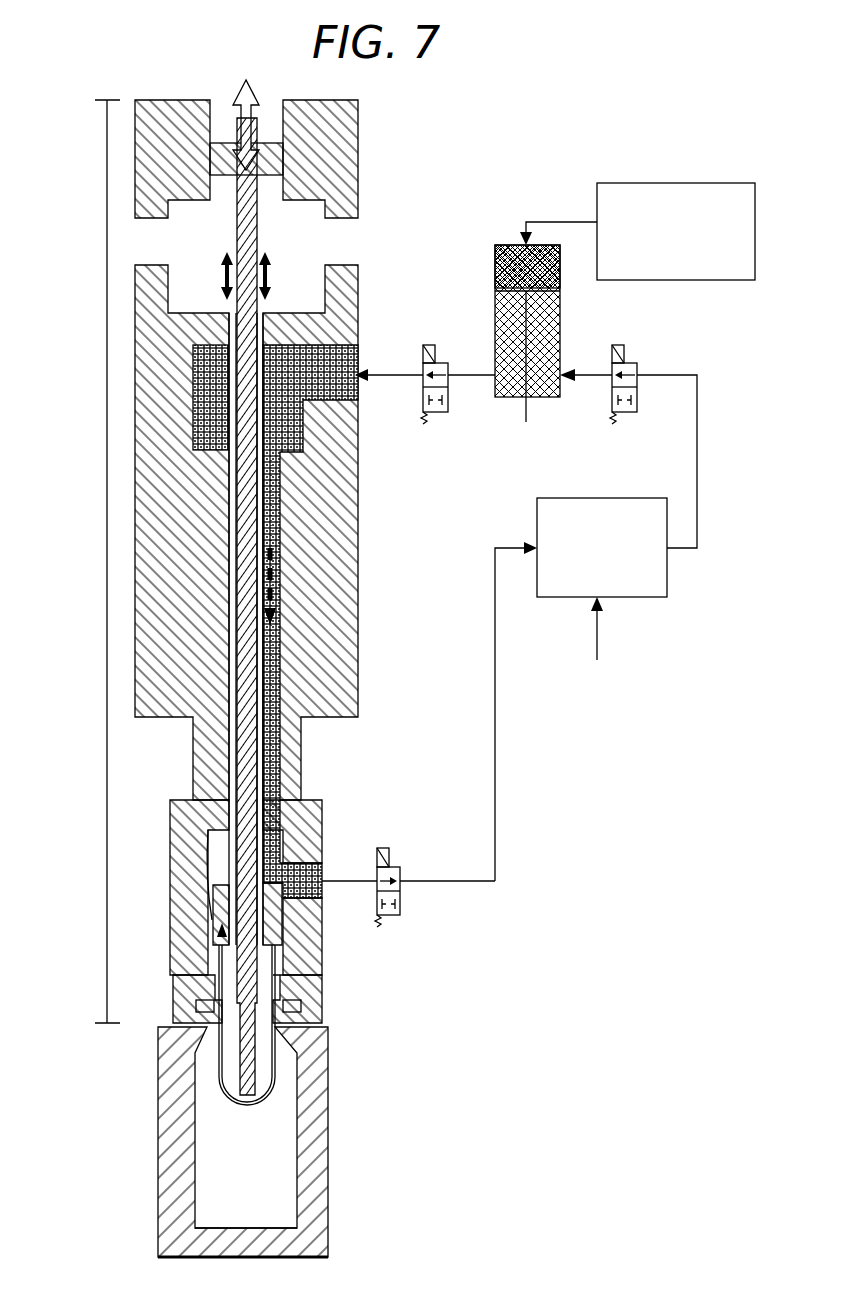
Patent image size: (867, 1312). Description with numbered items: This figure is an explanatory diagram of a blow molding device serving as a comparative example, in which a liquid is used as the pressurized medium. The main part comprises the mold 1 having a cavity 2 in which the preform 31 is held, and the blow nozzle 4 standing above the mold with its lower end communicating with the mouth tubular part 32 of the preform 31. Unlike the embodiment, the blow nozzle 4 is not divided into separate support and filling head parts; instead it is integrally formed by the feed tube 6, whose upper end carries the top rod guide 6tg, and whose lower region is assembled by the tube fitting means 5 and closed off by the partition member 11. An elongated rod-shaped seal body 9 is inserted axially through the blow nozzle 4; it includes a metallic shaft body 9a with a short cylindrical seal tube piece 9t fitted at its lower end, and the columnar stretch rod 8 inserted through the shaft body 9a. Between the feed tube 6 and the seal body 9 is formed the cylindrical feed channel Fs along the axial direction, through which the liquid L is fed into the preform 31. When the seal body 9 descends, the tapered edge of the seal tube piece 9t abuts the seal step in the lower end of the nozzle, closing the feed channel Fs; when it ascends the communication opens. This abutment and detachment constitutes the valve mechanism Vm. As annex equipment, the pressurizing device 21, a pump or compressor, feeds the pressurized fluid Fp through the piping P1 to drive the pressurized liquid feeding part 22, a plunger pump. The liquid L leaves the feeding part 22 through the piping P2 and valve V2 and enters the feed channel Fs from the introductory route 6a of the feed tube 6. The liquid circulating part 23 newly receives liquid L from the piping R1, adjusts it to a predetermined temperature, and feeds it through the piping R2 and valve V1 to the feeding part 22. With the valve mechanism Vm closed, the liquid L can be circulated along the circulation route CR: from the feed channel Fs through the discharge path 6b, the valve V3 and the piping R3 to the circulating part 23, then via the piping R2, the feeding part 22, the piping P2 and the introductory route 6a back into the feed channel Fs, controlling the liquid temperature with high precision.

The mold 1 is at (280, 1215).
The cavity 2 is at (275, 1226).
The blow nozzle 4 is at (107, 398).
The tube fitting means 5 is at (190, 905).
The feed tube 6 is at (242, 499).
The top rod guide 6tg is at (285, 152).
The introductory route 6a is at (358, 362).
The discharge path 6b is at (326, 860).
The stretch rod 8 is at (247, 648).
The seal body 9 is at (150, 606).
The shaft body 9a is at (230, 608).
The seal tube piece 9t is at (185, 805).
The partition member 11 is at (175, 1020).
The pressurizing device 21 is at (675, 180).
The pressurized liquid feeding part 22 is at (495, 303).
The liquid circulating part 23 is at (622, 603).
The preform 31 is at (275, 1080).
The mouth tubular part 32 is at (298, 1007).
The piping P1 is at (546, 222).
The piping P2 is at (397, 375).
The pressurized fluid Fp is at (497, 262).
The liquid L is at (277, 737).
The valve V1 is at (637, 405).
The valve V2 is at (440, 412).
The valve V3 is at (395, 915).
The piping R1 is at (593, 637).
The piping R2 is at (697, 450).
The piping R3 is at (495, 772).
The circulation route CR is at (520, 700).
The feed channel Fs is at (277, 650).
The valve mechanism Vm is at (213, 880).